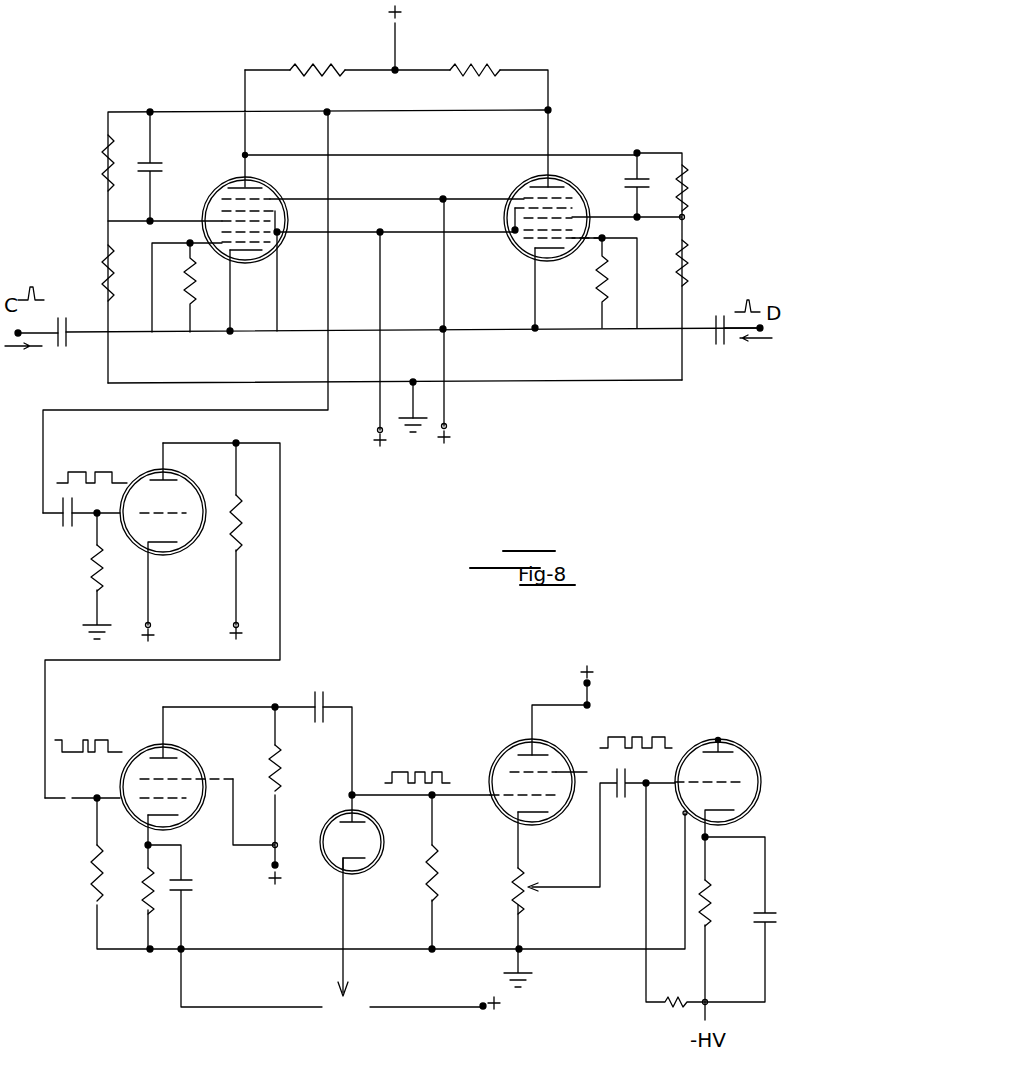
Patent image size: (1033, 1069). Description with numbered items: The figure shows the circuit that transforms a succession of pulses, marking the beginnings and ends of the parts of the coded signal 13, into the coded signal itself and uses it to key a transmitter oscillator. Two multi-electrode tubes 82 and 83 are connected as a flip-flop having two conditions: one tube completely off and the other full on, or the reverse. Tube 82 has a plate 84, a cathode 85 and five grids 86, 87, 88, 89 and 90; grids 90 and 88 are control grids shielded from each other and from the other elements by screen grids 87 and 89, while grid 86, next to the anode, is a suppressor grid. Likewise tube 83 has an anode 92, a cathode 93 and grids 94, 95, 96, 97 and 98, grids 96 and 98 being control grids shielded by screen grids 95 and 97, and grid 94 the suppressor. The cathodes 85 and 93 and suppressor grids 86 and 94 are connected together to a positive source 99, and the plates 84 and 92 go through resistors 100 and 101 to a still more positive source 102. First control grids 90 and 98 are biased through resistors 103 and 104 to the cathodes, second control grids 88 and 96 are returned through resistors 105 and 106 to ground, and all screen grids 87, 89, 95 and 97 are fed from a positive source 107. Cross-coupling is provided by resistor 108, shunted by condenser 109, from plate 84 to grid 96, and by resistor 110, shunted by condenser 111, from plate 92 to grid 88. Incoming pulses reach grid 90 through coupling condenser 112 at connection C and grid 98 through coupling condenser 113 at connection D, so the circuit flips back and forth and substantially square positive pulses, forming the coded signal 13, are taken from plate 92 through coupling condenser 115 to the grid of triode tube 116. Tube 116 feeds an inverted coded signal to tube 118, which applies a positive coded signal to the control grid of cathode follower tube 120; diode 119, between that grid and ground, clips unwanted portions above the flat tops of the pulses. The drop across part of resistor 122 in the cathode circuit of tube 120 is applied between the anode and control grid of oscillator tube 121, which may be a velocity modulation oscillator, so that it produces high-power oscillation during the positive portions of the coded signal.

The coded signal 13 is at (95, 480).
The multi-electrode tube 82 is at (262, 188).
The multi-electrode tube 83 is at (525, 185).
The plate 84 is at (268, 192).
The cathode 85 is at (250, 253).
The suppressor grid 86 is at (212, 198).
The screen grid 87 is at (218, 210).
The second control grid 88 is at (220, 220).
The screen grid 89 is at (268, 233).
The first control grid 90 is at (262, 250).
The anode 92 is at (520, 187).
The cathode 93 is at (540, 258).
The suppressor grid 94 is at (578, 182).
The screen grid 95 is at (572, 202).
The second control grid 96 is at (575, 216).
The screen grid 97 is at (580, 230).
The first control grid 98 is at (530, 250).
The source of positive potential 99 is at (448, 430).
The resistor 100 is at (318, 70).
The resistor 101 is at (478, 68).
The source of positive potential 102 is at (398, 26).
The biasing resistor 103 is at (185, 290).
The biasing resistor 104 is at (610, 290).
The resistor 105 is at (100, 265).
The resistor 106 is at (690, 258).
The source of positive potential 107 is at (385, 433).
The resistor 108 is at (690, 178).
The condenser 109 is at (648, 172).
The resistor 110 is at (100, 160).
The condenser 111 is at (145, 165).
The coupling condenser 112 is at (66, 315).
The coupling condenser 113 is at (706, 318).
The coupling condenser 115 is at (62, 522).
The triode tube 116 is at (175, 545).
The tube 118 is at (195, 758).
The diode 119 is at (332, 820).
The cathode follower tube 120 is at (505, 756).
The oscillator tube 121 is at (752, 745).
The resistor 122 is at (515, 886).